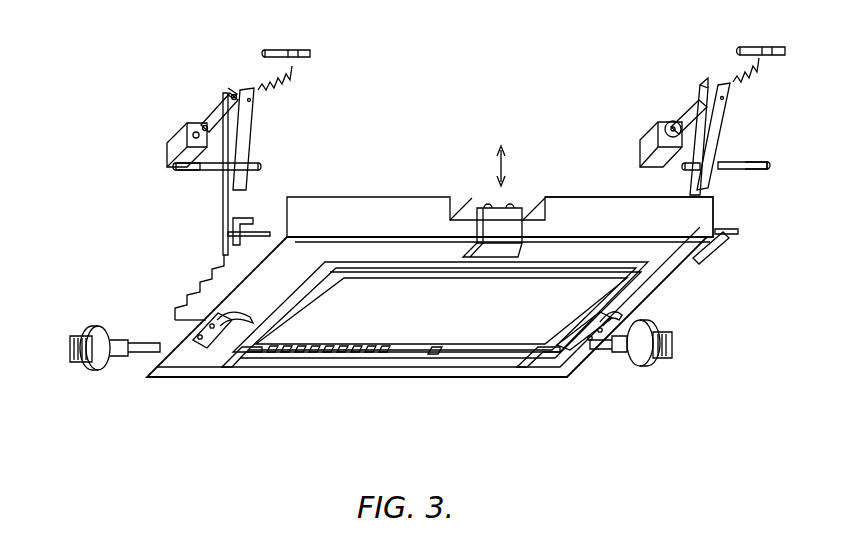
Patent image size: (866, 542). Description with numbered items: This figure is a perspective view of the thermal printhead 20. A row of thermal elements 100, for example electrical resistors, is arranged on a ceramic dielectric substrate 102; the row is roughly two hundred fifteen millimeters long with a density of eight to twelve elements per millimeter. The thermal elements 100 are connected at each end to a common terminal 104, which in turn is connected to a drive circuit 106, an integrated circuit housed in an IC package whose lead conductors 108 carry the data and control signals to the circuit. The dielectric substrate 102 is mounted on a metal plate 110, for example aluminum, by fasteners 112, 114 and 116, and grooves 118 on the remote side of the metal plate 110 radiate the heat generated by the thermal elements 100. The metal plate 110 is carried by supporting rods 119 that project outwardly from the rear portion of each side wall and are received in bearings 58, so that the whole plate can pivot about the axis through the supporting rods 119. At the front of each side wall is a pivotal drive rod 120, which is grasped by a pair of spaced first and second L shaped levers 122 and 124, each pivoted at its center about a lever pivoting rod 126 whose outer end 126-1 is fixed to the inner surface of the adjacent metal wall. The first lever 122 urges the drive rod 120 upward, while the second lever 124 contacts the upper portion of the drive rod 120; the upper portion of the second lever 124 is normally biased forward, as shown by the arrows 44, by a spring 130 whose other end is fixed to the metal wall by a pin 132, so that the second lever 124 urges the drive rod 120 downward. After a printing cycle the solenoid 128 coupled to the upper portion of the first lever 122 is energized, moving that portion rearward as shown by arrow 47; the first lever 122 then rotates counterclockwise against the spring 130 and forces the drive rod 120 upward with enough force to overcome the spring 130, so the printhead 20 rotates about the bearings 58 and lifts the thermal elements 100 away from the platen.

The printhead 20 is at (360, 210).
The arrows 44 is at (261, 51).
The arrow 47 is at (198, 110).
The bearings 58 is at (103, 367).
The thermal elements 100 is at (454, 276).
The dielectric substrate 102 is at (492, 362).
The common terminal 104 is at (247, 363).
The drive circuit 106 is at (463, 352).
The lead conductors 108 is at (322, 358).
The metal plate 110 is at (610, 210).
The fastener 112 is at (225, 343).
The fastener 114 is at (577, 346).
The fastener 116 is at (484, 223).
The grooves 118 is at (220, 273).
The supporting rods 119 is at (140, 352).
The pivotal drive rods 120 is at (253, 237).
The first L shaped lever 122 is at (233, 93).
The second L shaped lever 124 is at (254, 130).
The lever pivoting rod 126 is at (200, 170).
The outer end of lever pivoting rod 126-1 is at (176, 170).
The solenoid 128 is at (170, 148).
The spring 130 is at (283, 73).
The pins 132 is at (312, 53).